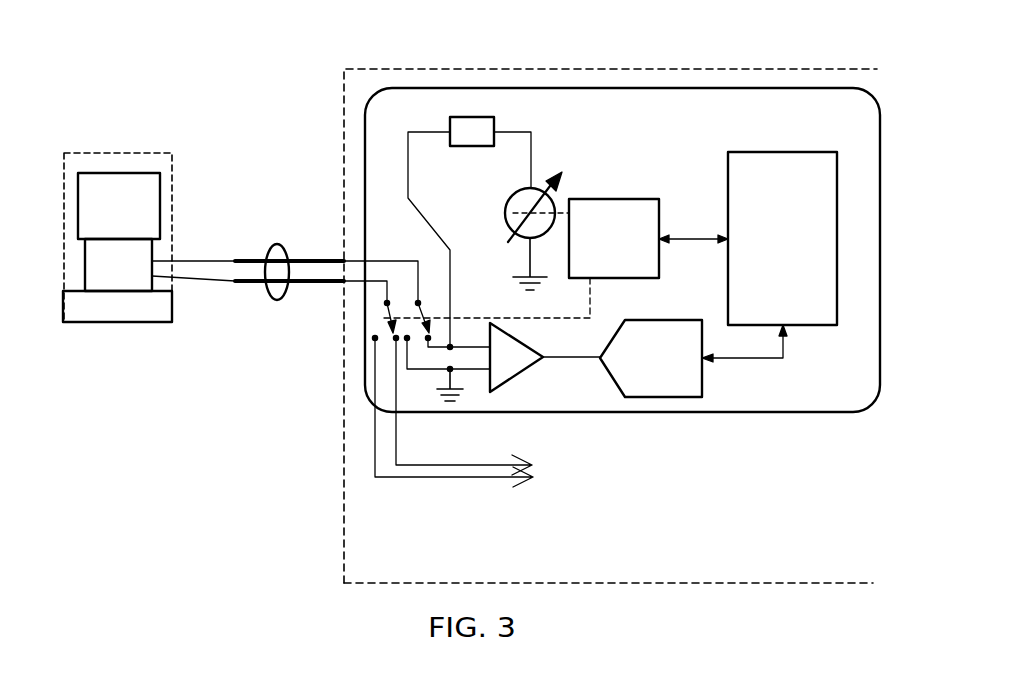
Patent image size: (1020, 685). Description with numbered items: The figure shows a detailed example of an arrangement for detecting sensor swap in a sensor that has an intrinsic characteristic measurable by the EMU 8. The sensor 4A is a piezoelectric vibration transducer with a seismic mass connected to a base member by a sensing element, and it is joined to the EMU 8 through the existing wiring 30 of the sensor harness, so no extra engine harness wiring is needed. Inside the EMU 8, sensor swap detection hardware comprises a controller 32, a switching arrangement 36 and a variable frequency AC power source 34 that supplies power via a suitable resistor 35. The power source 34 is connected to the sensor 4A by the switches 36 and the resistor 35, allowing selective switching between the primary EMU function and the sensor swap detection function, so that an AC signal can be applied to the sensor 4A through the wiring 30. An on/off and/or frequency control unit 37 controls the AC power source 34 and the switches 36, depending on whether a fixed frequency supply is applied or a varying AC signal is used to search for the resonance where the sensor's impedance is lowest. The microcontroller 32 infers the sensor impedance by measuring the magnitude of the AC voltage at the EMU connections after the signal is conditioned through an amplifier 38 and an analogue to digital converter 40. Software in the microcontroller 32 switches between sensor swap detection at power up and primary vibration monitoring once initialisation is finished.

The EMU 8 is at (293, 523).
The sensor 4A is at (175, 175).
The existing wiring 30 is at (277, 299).
The controller 32 is at (818, 325).
The variable frequency AC power source 34 is at (535, 180).
The resistor 35 is at (472, 117).
The switching arrangement 36 is at (350, 362).
The on/off and/or frequency control unit 37 is at (615, 199).
The amplifier 38 is at (515, 377).
The analogue to digital converter 40 is at (668, 397).